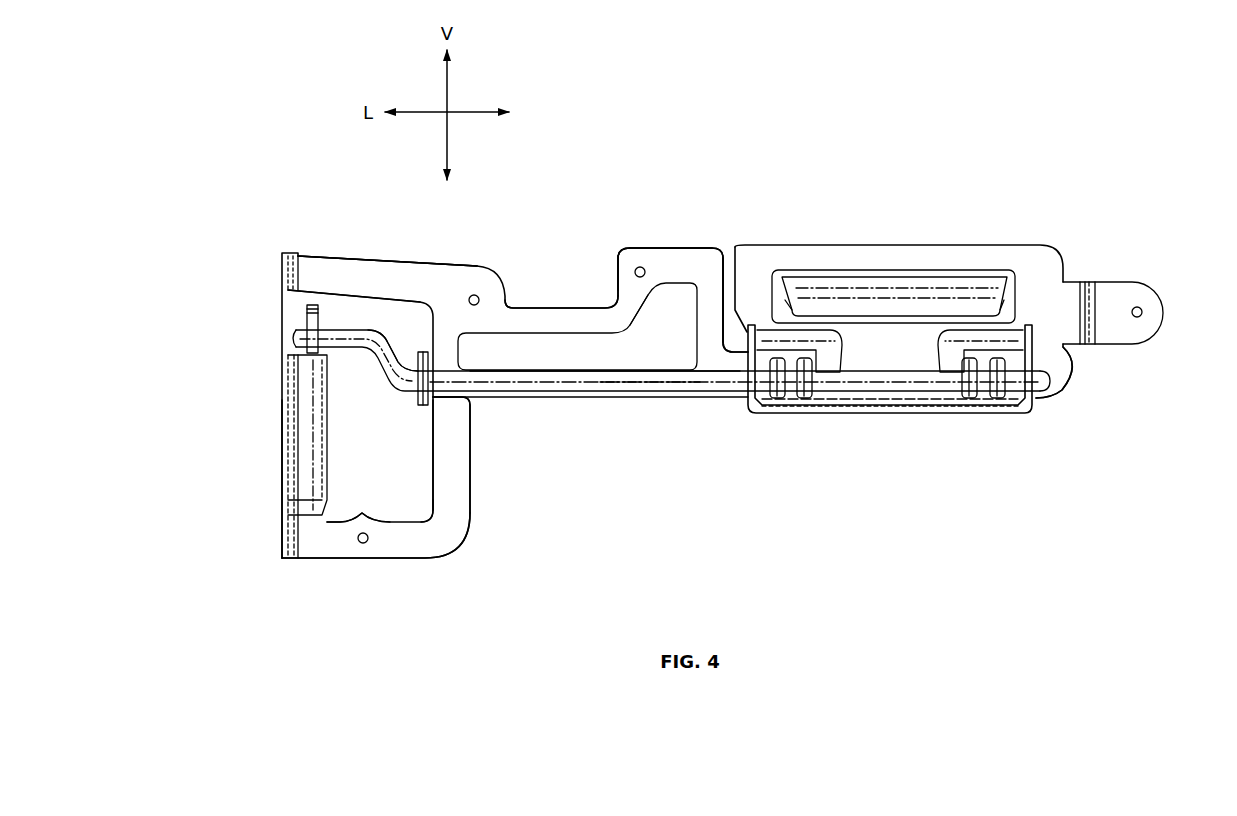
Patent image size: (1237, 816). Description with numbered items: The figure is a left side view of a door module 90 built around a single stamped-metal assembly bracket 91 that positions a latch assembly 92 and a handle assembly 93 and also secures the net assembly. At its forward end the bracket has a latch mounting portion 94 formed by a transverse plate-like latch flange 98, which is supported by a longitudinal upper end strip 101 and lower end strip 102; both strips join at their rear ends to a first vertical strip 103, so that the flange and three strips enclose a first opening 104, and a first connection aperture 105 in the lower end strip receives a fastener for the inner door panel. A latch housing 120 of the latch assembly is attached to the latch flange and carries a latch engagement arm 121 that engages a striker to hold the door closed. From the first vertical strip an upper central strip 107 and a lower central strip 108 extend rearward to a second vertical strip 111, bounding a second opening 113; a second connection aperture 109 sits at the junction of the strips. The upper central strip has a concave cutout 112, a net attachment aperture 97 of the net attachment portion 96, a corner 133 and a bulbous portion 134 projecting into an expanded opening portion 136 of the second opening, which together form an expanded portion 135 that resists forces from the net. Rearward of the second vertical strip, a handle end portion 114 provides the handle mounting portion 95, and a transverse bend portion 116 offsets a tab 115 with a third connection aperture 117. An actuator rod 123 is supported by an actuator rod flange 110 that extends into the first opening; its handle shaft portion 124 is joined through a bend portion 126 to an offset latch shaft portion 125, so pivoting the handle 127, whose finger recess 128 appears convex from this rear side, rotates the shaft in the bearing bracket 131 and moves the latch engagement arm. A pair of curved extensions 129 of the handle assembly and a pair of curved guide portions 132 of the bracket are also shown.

The door module 90 is at (545, 253).
The assembly bracket 91 is at (325, 250).
The latch assembly 92 is at (326, 514).
The handle assembly 93 is at (898, 237).
The latch mounting portion 94 is at (270, 499).
The handle mounting portion 95 is at (933, 420).
The net attachment portion 96 is at (635, 232).
The net attachment aperture 97 is at (648, 266).
The latch flange 98 is at (282, 277).
The upper end strip 101 is at (367, 272).
The lower end strip 102 is at (408, 545).
The first vertical strip 103 is at (453, 473).
The first opening 104 is at (364, 475).
The first connection aperture 105 is at (366, 543).
The upper central strip 107 is at (580, 315).
The lower central strip 108 is at (627, 393).
The second connection aperture 109 is at (475, 295).
The actuator rod flange 110 is at (432, 393).
The second vertical strip 111 is at (712, 305).
The cutout 112 is at (539, 298).
The second opening 113 is at (541, 362).
The handle end portion 114 is at (723, 400).
The tab 115 is at (1128, 292).
The transverse bend portion 116 is at (1083, 290).
The third connection aperture 117 is at (1142, 310).
The latch housing 120 is at (295, 440).
The latch engagement arm 121 is at (312, 320).
The actuator rod 123 is at (553, 399).
The handle shaft portion 124 is at (592, 381).
The latch shaft portion 125 is at (353, 340).
The bend portion 126 is at (390, 355).
The handle 127 is at (838, 262).
The recess 128 is at (945, 288).
The curved extensions 129 is at (790, 348).
The bearing bracket 131 is at (752, 326).
The curved guide portions 132 is at (802, 407).
The corner 133 is at (632, 268).
The bulbous portion 134 is at (661, 297).
The expanded portion 135 is at (652, 307).
The expanded opening portion 136 is at (655, 387).